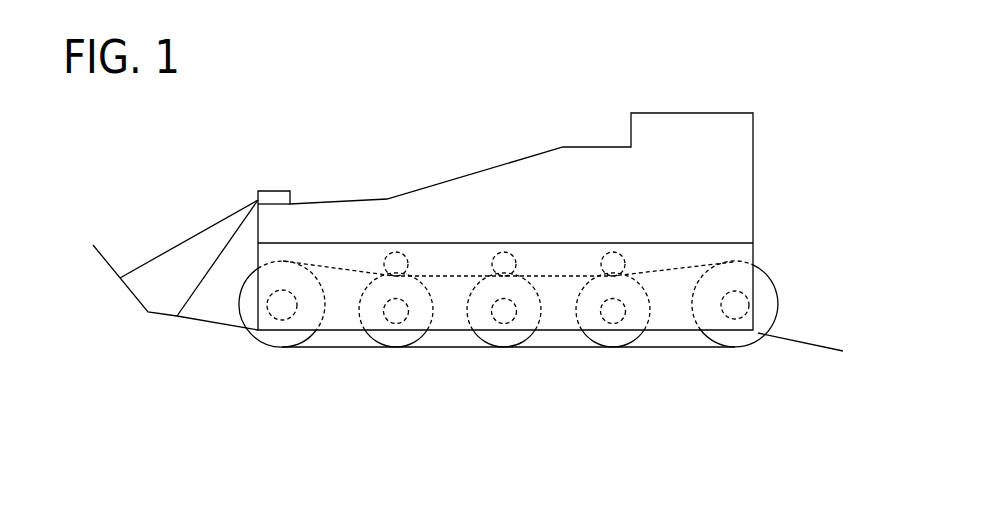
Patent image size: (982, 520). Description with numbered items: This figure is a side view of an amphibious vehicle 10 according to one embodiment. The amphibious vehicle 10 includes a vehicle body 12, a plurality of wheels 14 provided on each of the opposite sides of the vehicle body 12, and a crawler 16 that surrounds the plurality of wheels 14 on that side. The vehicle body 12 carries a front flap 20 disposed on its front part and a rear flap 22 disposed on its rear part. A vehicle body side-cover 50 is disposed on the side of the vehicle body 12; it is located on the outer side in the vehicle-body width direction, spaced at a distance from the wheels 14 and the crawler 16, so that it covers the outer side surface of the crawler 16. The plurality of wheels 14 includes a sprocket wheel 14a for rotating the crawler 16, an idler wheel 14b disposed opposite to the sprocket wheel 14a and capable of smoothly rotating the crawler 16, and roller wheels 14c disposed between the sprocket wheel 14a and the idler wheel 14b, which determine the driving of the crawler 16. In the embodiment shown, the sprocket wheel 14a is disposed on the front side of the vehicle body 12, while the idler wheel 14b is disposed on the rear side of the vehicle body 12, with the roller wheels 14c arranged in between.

The amphibious vehicle 10 is at (490, 58).
The vehicle body 12 is at (531, 155).
The wheels 14 is at (521, 340).
The sprocket wheel 14a is at (280, 340).
The idler wheel 14b is at (738, 338).
The roller wheels 14c is at (603, 343).
The crawler 16 is at (668, 348).
The front flap 20 is at (135, 297).
The rear flap 22 is at (802, 342).
The vehicle body side-cover 50 is at (345, 333).